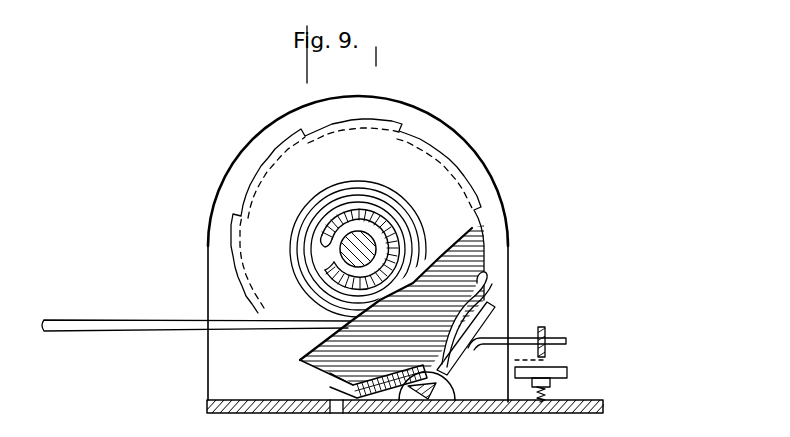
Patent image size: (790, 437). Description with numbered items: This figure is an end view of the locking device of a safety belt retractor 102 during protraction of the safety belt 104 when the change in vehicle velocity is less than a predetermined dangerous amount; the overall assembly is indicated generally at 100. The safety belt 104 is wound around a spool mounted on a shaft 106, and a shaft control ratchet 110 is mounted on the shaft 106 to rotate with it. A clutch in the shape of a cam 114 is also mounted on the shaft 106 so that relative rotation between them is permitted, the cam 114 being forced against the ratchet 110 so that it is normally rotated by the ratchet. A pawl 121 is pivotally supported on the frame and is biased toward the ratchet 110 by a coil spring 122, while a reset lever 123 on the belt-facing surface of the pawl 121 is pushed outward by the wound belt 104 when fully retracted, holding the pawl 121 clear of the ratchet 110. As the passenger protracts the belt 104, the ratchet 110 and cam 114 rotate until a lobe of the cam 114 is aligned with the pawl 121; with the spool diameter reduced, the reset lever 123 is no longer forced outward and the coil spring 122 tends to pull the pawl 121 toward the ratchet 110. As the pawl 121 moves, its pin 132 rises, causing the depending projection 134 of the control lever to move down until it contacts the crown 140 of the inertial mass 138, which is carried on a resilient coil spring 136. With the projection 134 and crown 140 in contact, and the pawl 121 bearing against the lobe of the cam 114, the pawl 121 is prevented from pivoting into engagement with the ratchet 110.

The measuring tape assembly 100 is at (528, 140).
The safety belt retractor 102 is at (244, 142).
The safety belt 104 is at (118, 323).
The shaft 106 is at (367, 246).
The shaft control ratchet 110 is at (403, 122).
The cam 114 is at (470, 245).
The pawl 121 is at (490, 310).
The coil spring 122 is at (345, 379).
The reset lever 123 is at (474, 278).
The pin 132 is at (568, 336).
The depending projection 134 is at (547, 360).
The coil spring 136 is at (547, 393).
The inertial mass 138 is at (567, 373).
The crown 140 is at (508, 357).